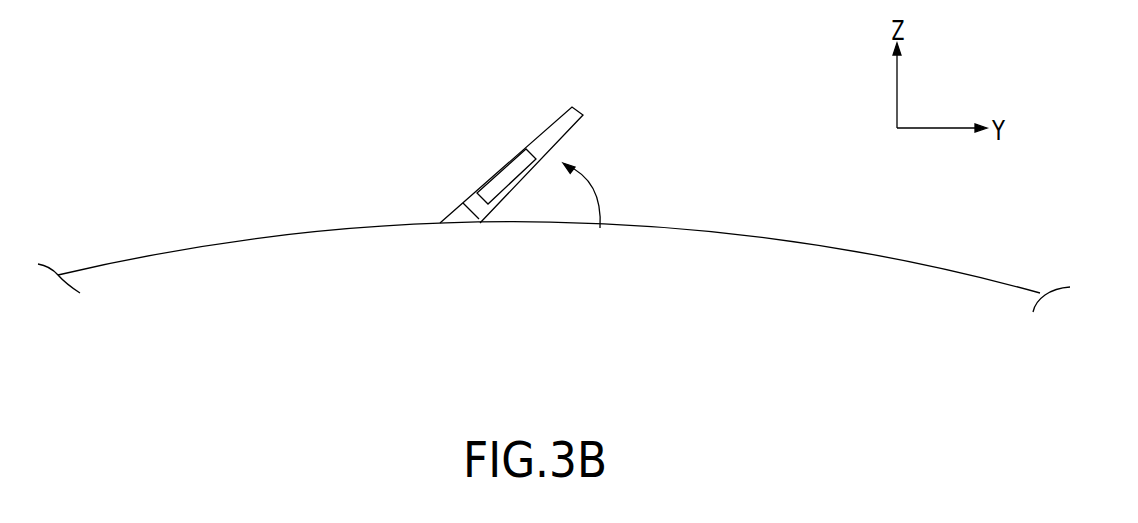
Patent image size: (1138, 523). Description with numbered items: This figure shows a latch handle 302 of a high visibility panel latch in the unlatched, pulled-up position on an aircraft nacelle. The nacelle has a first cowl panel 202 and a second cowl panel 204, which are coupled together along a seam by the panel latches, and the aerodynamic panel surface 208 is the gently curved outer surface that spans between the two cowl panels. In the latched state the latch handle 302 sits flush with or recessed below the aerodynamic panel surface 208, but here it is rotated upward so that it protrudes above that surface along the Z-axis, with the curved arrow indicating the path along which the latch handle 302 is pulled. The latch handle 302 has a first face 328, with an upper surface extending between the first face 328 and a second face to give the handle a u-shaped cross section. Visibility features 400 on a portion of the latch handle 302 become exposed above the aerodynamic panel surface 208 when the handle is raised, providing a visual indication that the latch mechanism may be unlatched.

The first cowl panel 202 is at (83, 265).
The second cowl panel 204 is at (1030, 290).
The aerodynamic panel surface 208 is at (227, 238).
The latch handle 302 is at (504, 118).
The first face 328 is at (545, 135).
The visibility features 400 is at (483, 177).